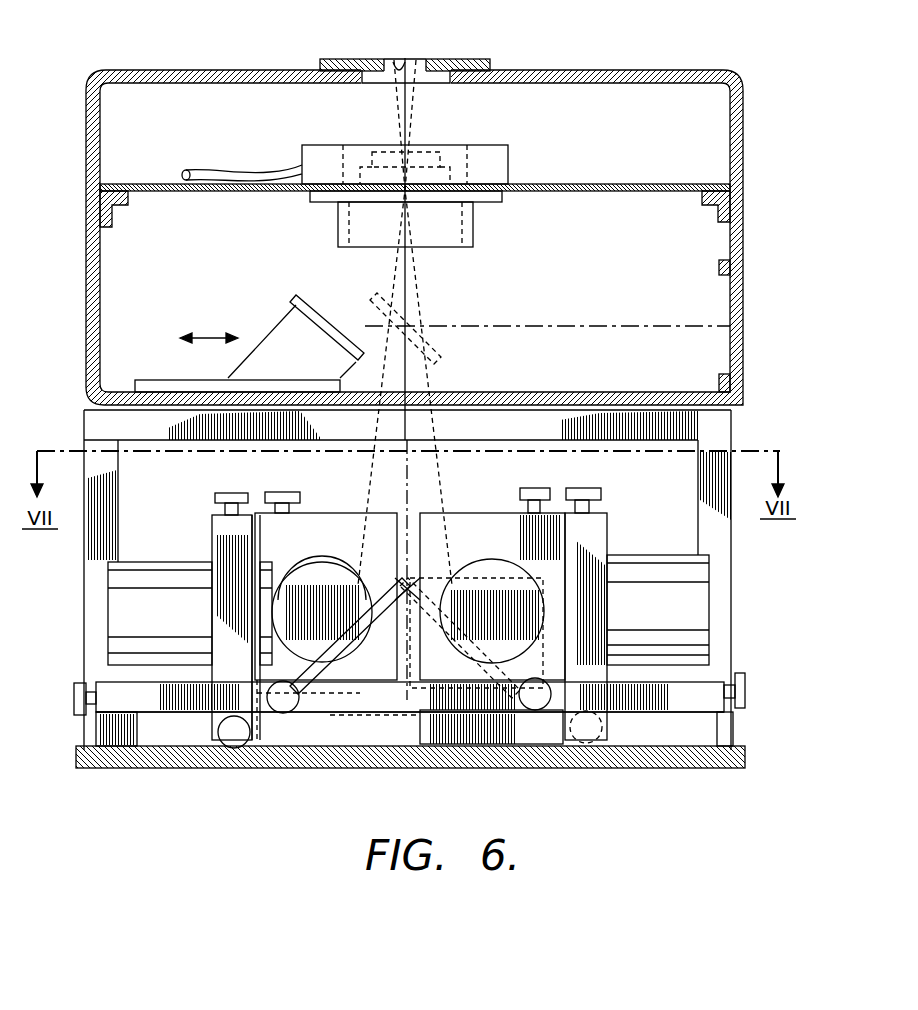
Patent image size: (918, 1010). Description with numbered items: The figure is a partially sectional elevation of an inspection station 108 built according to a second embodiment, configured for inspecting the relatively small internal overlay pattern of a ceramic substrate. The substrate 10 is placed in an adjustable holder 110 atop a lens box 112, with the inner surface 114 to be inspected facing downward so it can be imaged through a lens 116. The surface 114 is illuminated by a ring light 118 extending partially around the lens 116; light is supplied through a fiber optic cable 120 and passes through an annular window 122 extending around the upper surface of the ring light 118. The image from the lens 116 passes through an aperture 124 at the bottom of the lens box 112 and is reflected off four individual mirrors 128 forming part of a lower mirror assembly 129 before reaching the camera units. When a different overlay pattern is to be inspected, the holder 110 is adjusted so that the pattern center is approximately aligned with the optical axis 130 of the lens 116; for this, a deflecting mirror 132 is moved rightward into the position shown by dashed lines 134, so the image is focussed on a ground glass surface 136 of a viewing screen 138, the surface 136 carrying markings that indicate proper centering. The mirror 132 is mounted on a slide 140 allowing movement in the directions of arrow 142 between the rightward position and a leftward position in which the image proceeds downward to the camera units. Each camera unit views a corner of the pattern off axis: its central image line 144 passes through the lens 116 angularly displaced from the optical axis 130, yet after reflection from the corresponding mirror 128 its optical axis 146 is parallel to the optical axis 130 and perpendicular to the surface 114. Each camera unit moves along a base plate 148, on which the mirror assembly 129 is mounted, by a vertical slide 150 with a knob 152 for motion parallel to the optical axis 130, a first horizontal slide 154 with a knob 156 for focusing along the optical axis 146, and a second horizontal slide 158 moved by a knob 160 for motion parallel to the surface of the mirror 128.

The substrate 10 is at (412, 62).
The inspection station 108 is at (75, 309).
The adjustable holder 110 is at (344, 59).
The lens box 112 is at (233, 71).
The inner surface 114 is at (400, 178).
The lens 116 is at (441, 152).
The ring light 118 is at (344, 162).
The fiber optic cable 120 is at (234, 169).
The annular window 122 is at (322, 145).
The aperture 124 is at (440, 392).
The mirror 128 is at (352, 575).
The lower mirror assembly 129 is at (383, 645).
The optical axis 130 is at (406, 305).
The deflecting mirror 132 is at (296, 300).
The dashed lines 134 is at (372, 304).
The ground glass surface 136 is at (730, 341).
The viewing screen 138 is at (744, 318).
The slide 140 is at (176, 379).
The arrow 142 is at (217, 337).
The central image line 144 is at (407, 478).
The optical axis 146 is at (450, 560).
The base plate 148 is at (614, 769).
The vertical slide 150 is at (604, 513).
The knob 152 is at (594, 489).
The first horizontal slide 154 is at (718, 678).
The knob 156 is at (746, 692).
The second horizontal slide 158 is at (720, 726).
The knob 160 is at (218, 732).